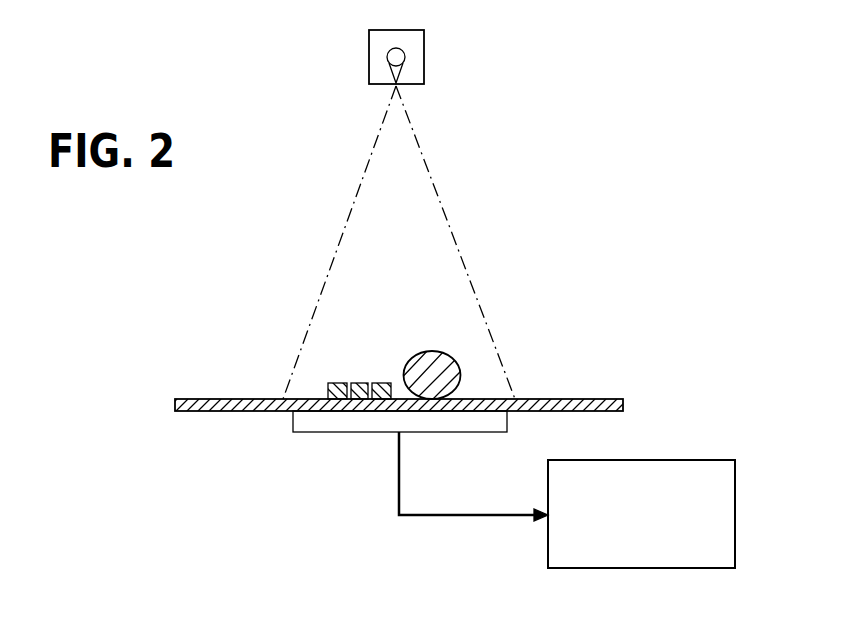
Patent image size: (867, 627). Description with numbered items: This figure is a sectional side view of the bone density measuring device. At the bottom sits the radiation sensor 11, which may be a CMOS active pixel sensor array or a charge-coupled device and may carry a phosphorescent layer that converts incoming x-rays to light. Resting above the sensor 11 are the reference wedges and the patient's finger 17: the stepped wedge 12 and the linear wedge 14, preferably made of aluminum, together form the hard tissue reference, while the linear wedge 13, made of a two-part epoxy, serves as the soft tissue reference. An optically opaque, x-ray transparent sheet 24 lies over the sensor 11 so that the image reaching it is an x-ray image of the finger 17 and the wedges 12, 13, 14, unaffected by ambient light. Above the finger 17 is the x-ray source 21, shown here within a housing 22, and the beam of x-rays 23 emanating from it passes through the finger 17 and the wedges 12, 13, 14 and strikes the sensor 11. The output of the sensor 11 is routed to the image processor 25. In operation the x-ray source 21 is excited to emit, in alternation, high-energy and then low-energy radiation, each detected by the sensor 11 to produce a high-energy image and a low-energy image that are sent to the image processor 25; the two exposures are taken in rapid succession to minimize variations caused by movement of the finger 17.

The radiation sensor 11 is at (309, 432).
The stepped wedge 12 is at (338, 383).
The linear wedge 13 is at (360, 383).
The linear wedge 14 is at (383, 383).
The finger 17 is at (455, 362).
The x-ray source 21 is at (405, 53).
The camera 22 is at (369, 57).
The field of view 23 is at (428, 167).
The optically opaque, x-ray transparent sheet 24 is at (175, 400).
The image processor 25 is at (700, 461).